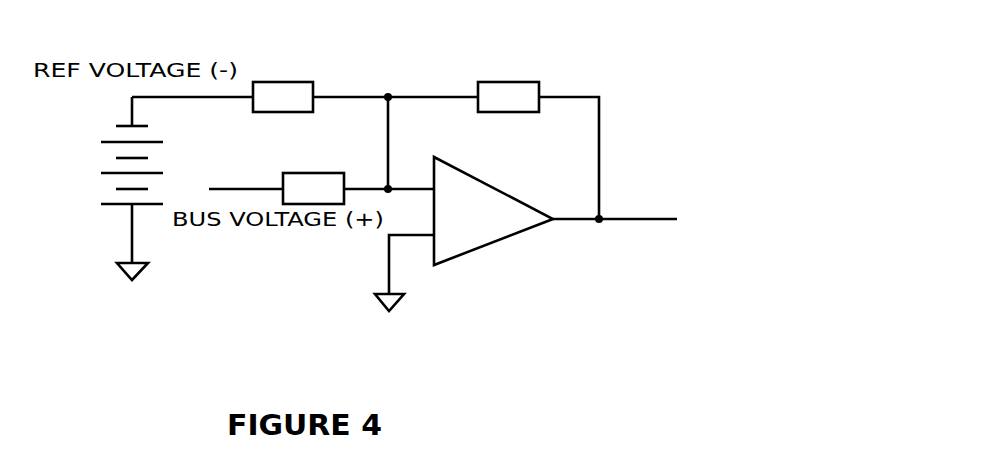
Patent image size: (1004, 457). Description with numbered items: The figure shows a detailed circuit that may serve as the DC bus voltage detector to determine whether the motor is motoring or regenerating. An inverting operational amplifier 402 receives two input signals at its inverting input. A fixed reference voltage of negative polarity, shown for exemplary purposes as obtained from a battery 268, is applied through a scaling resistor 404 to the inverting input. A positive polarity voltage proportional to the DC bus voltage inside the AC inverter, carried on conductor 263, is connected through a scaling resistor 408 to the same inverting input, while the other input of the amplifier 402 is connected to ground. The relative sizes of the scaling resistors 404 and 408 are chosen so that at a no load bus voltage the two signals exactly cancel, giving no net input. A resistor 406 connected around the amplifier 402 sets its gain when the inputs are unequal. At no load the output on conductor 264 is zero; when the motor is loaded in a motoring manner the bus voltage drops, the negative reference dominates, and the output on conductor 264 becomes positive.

The conductor 263 is at (213, 189).
The conductor 264 is at (627, 219).
The battery 268 is at (87, 177).
The inverting operational amplifier 402 is at (492, 184).
The scaling resistor 404 is at (270, 82).
The resistor 406 is at (491, 82).
The scaling resistor 408 is at (293, 173).